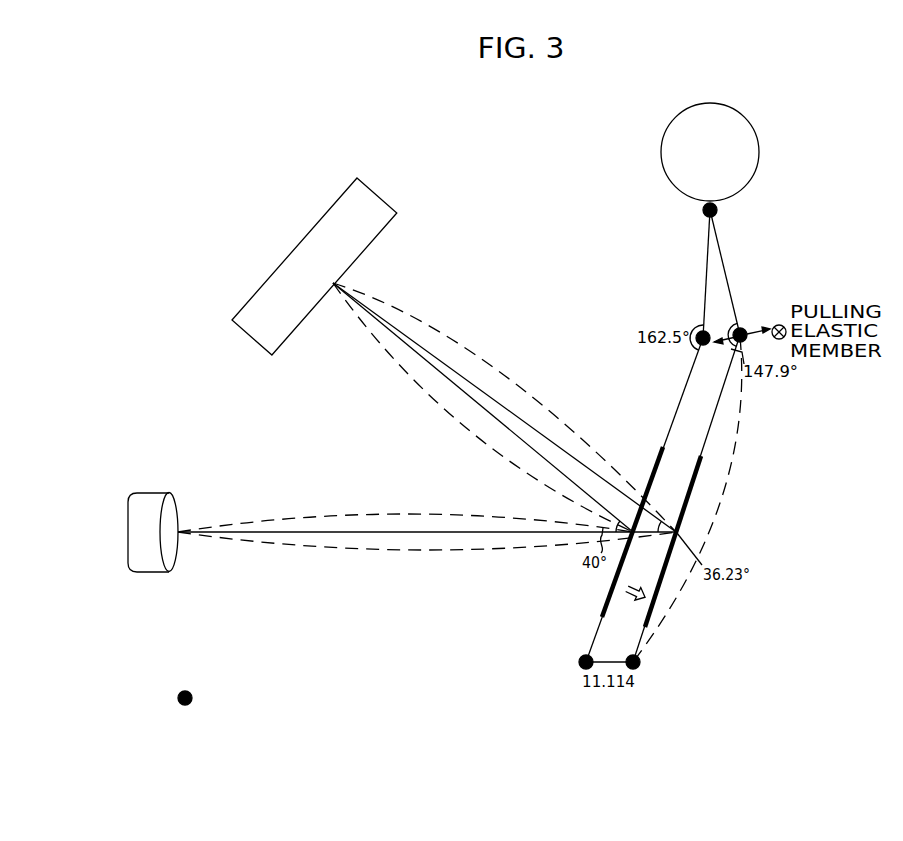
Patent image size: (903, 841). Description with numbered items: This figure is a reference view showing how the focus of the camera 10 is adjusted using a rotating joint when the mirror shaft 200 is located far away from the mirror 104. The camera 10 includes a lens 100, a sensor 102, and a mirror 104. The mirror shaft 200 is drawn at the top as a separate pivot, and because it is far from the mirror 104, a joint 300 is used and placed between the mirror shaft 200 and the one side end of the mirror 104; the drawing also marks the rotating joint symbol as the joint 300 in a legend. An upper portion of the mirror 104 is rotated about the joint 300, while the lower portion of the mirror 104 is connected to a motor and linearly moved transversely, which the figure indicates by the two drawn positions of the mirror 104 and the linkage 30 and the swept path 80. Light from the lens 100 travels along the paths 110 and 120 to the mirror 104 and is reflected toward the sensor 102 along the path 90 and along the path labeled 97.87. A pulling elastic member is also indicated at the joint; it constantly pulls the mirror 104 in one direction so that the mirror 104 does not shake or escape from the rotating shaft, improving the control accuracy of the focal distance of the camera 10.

The camera 10 is at (565, 172).
The connecting link 30 is at (716, 216).
The mirror movement trajectory 80 is at (687, 499).
The reflected light path 90 is at (483, 407).
The lens 100 is at (160, 493).
The sensor 102 is at (378, 195).
The mirror 104 is at (608, 582).
The first light path 110 is at (405, 518).
The second light path 120 is at (427, 546).
The mirror shaft 200 is at (735, 107).
The joint 300 is at (187, 690).
The reflected light path length 97.87 is at (504, 407).